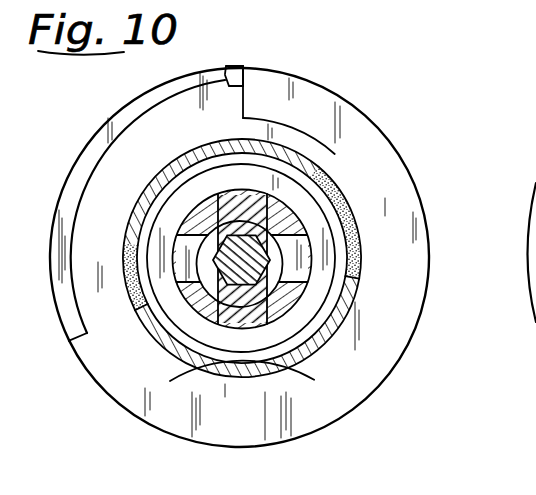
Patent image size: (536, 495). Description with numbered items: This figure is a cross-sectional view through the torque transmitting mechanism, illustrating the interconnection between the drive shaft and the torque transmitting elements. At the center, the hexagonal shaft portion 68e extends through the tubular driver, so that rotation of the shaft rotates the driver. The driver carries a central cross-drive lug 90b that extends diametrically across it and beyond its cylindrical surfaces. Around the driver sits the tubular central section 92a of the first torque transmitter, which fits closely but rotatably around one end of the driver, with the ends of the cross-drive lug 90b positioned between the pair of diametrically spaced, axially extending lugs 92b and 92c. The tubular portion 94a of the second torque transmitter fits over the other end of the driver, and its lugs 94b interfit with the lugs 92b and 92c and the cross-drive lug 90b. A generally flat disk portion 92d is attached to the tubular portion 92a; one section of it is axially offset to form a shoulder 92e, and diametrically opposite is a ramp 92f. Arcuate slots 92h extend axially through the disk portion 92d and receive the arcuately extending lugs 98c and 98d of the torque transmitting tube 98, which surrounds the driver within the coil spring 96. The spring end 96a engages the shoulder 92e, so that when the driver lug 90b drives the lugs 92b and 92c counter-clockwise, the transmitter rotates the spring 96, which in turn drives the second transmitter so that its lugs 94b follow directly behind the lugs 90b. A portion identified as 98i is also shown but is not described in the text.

The coil spring 96 is at (97, 143).
The spring end 96a is at (248, 70).
The shoulder 92e is at (227, 72).
The cross-drive lug 90b is at (252, 196).
The lug 94b is at (279, 210).
The tubular portion 94a is at (198, 314).
The torque transmitting tube 98 is at (187, 165).
The arcuate lug 98c is at (350, 208).
The spring ring end 98i is at (350, 274).
The arcuate lug 98d is at (134, 308).
The tubular central section 92a is at (355, 303).
The axially extending lug 92b is at (203, 203).
The axially extending lug 92c is at (297, 348).
The disk portion 92d is at (400, 340).
The ramp 92f is at (233, 428).
The arcuate slot 92h is at (150, 209).
The shaft portion 68e is at (215, 258).